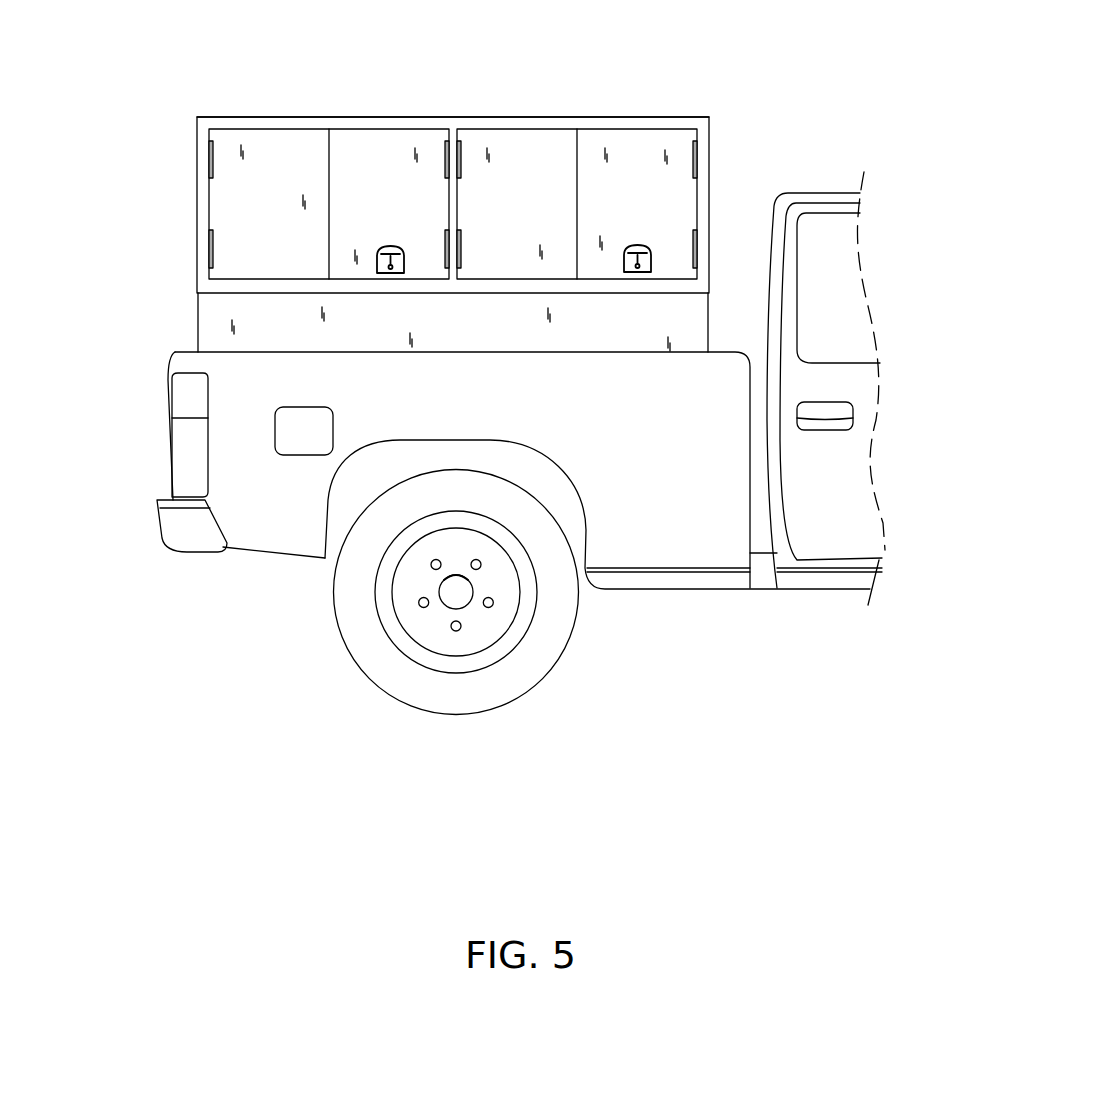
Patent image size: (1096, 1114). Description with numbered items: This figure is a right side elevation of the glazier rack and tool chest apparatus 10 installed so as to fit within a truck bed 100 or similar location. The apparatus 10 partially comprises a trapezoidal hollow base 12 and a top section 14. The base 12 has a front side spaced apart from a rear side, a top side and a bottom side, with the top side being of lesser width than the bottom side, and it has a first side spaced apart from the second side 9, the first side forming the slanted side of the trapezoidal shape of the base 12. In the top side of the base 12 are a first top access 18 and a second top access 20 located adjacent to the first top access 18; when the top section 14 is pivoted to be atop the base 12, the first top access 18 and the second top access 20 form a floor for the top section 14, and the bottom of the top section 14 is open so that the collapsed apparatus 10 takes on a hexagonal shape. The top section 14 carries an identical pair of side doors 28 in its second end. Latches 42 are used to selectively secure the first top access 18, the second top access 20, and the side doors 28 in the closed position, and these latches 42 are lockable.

The truck bed 100 is at (185, 580).
The trapezoidal hollow base 12 is at (199, 327).
The second side 9 is at (205, 309).
The apparatus 10 is at (275, 105).
The top section 14 is at (392, 122).
The first top access 18 is at (422, 128).
The second top access 20 is at (677, 128).
The side doors 28 is at (227, 143).
The latches 42 is at (384, 247).